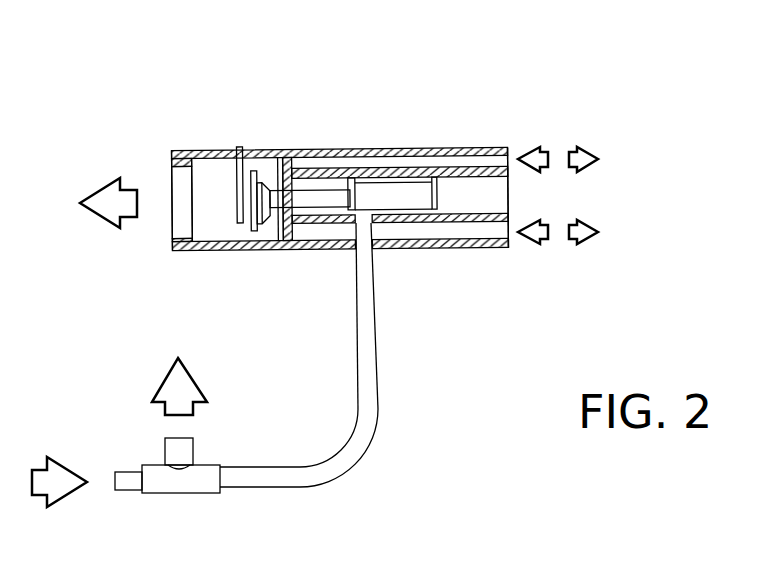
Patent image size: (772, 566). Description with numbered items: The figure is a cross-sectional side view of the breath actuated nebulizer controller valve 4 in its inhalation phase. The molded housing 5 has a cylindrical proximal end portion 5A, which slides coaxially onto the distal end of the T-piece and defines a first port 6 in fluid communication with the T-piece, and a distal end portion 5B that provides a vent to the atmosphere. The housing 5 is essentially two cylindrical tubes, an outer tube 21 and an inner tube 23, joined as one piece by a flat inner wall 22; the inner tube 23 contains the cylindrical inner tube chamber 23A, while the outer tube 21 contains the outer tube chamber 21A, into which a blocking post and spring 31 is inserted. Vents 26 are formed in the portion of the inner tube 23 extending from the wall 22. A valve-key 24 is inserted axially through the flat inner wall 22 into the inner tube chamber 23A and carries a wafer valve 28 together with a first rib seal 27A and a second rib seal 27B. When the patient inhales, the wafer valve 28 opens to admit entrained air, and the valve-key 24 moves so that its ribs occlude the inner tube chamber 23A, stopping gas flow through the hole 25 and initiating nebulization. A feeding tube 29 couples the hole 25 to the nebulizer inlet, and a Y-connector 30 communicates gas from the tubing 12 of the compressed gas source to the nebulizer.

The control valve 4 is at (561, 25).
The housing 5 is at (174, 262).
The proximal end portion 5A is at (171, 152).
The distal end portion 5B is at (510, 143).
The first port 6 is at (180, 218).
The tubing 12 is at (123, 470).
The outer tube 21 is at (303, 250).
The outer tube chamber 21A is at (458, 243).
The flat inner wall 22 is at (262, 150).
The inner tube 23 is at (327, 172).
The inner tube chamber 23A is at (485, 200).
The valve-key 24 is at (400, 198).
The hole 25 is at (373, 253).
The vents 26 is at (298, 167).
The first rib seal 27A is at (377, 183).
The second rib seal 27B is at (456, 180).
The wafer valve 28 is at (249, 247).
The feeding tube 29 is at (378, 403).
The Y-connector 30 is at (205, 465).
The blocking post and spring 31 is at (233, 147).